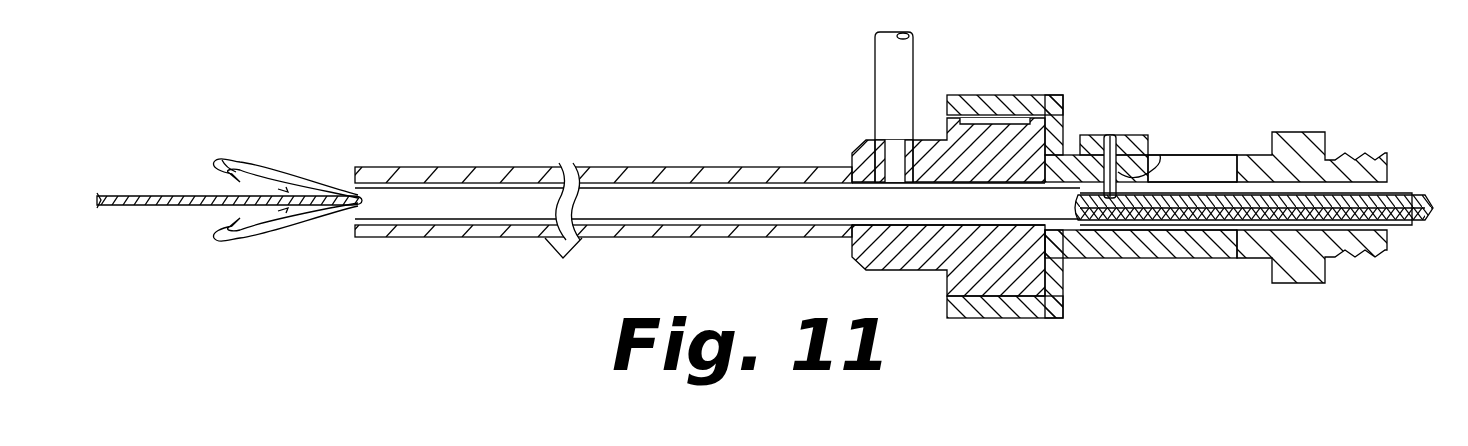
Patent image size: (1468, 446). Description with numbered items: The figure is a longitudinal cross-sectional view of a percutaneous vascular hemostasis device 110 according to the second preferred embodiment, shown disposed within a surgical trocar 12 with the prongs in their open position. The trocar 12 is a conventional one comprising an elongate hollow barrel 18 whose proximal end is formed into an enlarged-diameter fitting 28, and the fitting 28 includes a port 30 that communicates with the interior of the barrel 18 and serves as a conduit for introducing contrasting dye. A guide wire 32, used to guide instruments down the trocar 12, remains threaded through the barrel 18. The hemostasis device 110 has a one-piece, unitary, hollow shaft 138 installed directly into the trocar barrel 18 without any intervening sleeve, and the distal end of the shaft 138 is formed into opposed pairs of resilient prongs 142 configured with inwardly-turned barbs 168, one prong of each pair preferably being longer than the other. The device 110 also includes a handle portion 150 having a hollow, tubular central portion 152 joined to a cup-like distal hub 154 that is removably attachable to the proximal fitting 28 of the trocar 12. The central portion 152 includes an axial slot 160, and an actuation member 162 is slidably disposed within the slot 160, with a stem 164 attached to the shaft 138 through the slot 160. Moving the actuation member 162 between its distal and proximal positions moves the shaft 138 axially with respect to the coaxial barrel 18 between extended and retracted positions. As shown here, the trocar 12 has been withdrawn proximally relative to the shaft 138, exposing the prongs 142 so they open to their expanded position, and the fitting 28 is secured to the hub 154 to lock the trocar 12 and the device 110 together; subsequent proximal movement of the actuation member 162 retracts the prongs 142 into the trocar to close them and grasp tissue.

The hemostasis device 110 is at (1320, 88).
The trocar 12 is at (853, 153).
The barrel 18 is at (563, 231).
The fitting 28 is at (955, 262).
The port 30 is at (902, 63).
The guide wire 32 is at (140, 206).
The shaft 138 is at (448, 200).
The prongs 142 is at (265, 173).
The handle portion 150 is at (1293, 234).
The central portion 152 is at (1157, 258).
The distal hub 154 is at (1012, 95).
The axial slot 160 is at (1210, 162).
The actuation member 162 is at (1137, 133).
The stem 164 is at (1152, 162).
The barbs 168 is at (220, 163).